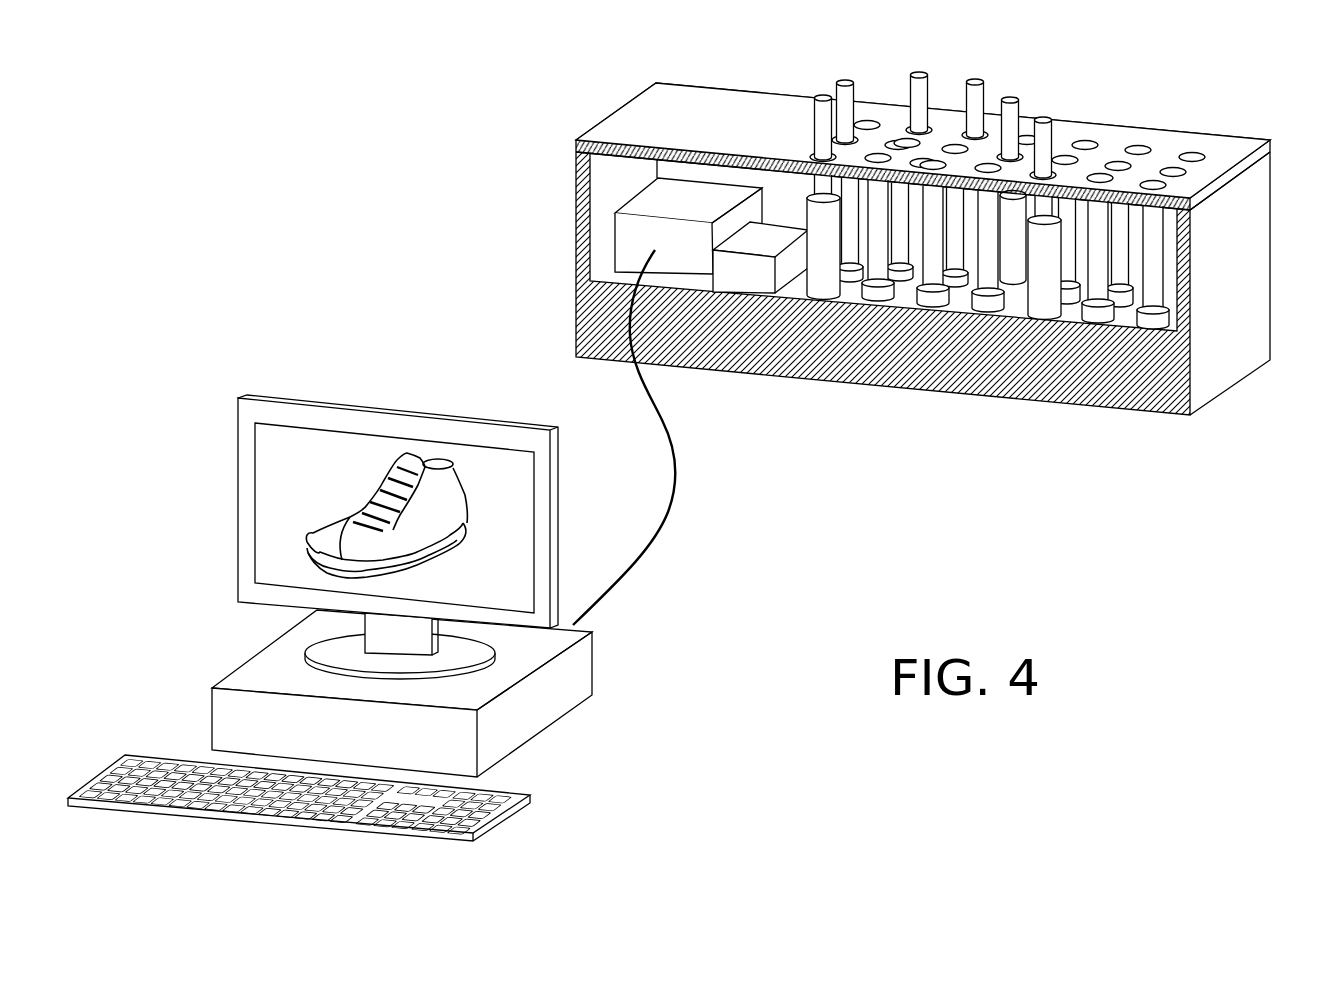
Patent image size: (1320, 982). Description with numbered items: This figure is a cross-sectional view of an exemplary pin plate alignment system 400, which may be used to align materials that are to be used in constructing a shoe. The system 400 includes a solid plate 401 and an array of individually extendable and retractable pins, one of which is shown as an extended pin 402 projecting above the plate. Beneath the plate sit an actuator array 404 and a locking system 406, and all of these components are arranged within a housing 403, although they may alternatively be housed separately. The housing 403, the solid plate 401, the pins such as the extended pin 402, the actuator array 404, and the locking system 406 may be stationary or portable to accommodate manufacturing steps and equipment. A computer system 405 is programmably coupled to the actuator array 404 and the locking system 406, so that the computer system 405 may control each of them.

The pin plate alignment system 400 is at (275, 158).
The solid plate 401 is at (1212, 142).
The extended pin 402 is at (1043, 118).
The housing 403 is at (1232, 373).
The actuator array 404 is at (627, 234).
The computer system 405 is at (300, 417).
The locking system 406 is at (748, 272).